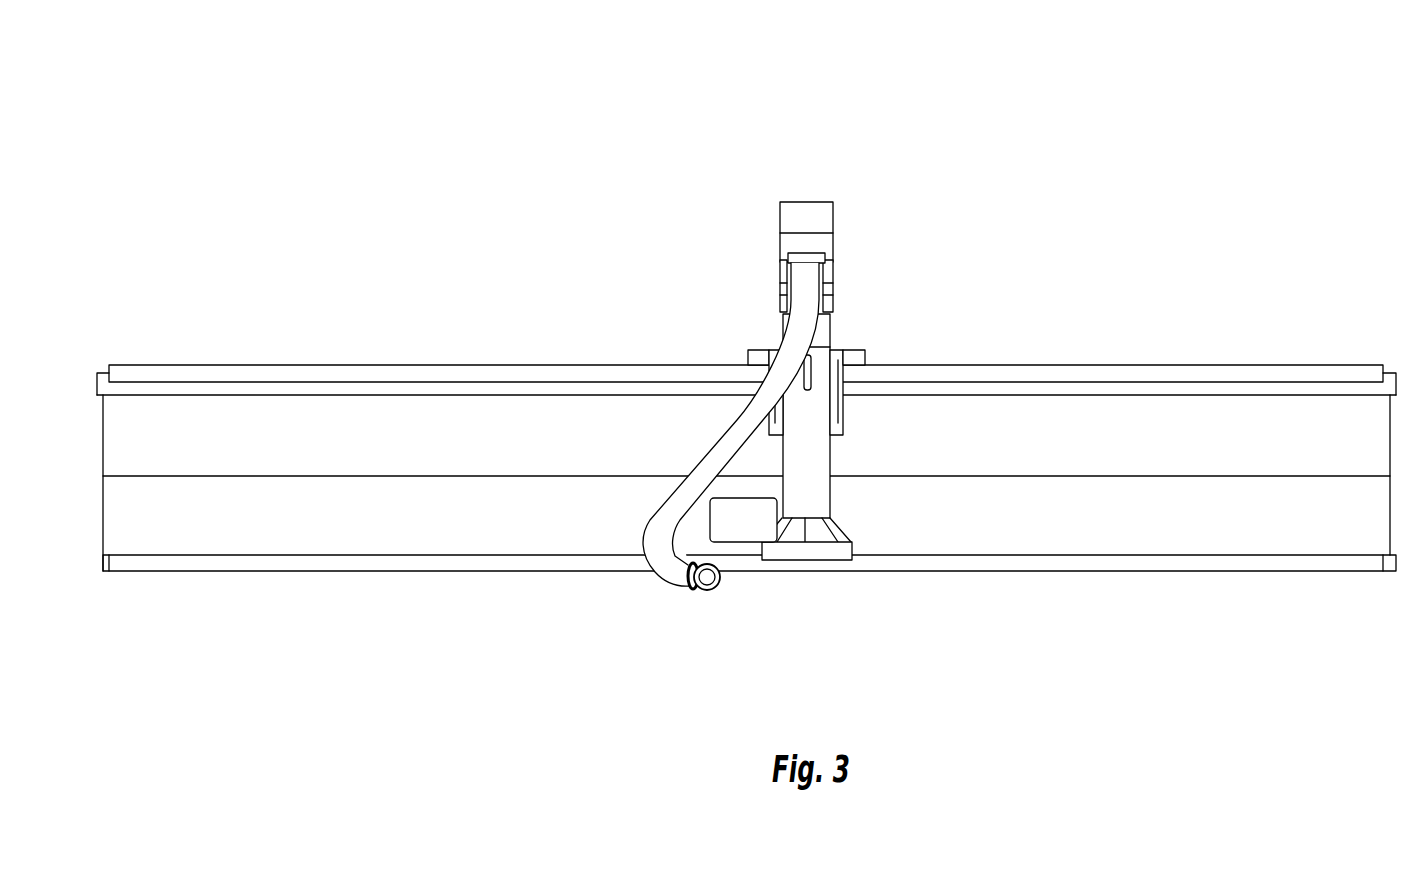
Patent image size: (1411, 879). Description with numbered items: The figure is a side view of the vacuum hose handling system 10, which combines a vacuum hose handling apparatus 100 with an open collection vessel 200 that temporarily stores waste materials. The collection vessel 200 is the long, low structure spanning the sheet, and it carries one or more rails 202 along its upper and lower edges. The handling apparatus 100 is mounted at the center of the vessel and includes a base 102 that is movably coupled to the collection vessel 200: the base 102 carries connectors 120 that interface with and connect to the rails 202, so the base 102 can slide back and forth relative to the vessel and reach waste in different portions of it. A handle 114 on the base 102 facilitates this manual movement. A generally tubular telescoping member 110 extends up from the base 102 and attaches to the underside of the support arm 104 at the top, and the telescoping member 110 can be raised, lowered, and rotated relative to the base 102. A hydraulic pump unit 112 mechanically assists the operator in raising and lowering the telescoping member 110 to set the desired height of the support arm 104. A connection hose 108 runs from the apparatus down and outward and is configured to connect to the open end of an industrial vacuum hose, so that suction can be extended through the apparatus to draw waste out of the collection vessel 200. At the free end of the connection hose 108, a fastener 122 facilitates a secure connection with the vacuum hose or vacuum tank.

The vacuum hose handling system 10 is at (1161, 79).
The vacuum hose handling apparatus 100 is at (742, 138).
The base 102 is at (835, 455).
The support arm 104 is at (811, 202).
The connection hose 108 is at (645, 545).
The telescoping member 110 is at (822, 278).
The hydraulic pump unit 112 is at (738, 542).
The handle 114 is at (812, 370).
The connectors 120 is at (858, 350).
The fastener 122 is at (707, 590).
The open collection vessel 200 is at (1220, 352).
The rails 202 is at (413, 365).